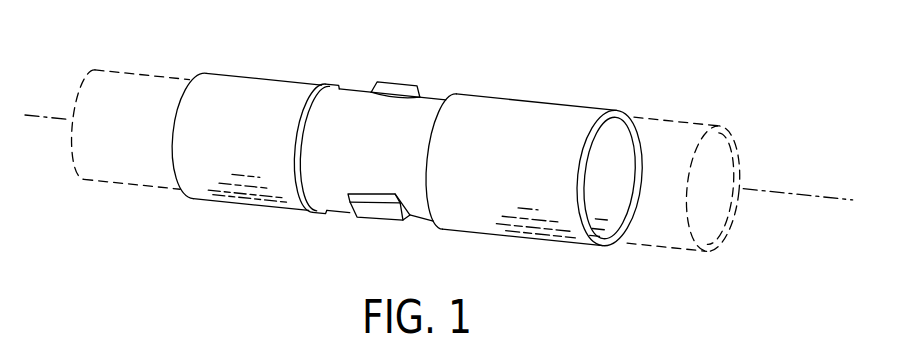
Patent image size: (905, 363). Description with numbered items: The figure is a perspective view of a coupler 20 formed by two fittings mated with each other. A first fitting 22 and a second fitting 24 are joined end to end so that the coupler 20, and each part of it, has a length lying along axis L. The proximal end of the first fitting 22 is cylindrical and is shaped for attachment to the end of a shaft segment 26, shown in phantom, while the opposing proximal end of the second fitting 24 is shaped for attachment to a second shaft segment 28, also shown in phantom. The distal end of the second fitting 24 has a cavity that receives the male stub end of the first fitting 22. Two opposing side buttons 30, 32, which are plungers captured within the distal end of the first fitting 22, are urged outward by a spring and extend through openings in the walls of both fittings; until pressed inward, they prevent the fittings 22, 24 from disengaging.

The coupler 20 is at (482, 53).
The first fitting 22 is at (258, 76).
The second fitting 24 is at (578, 101).
The shaft segment 26 is at (147, 72).
The shaft segment 28 is at (692, 119).
The side button 30 is at (395, 80).
The side button 32 is at (378, 211).
The axis L is at (832, 197).